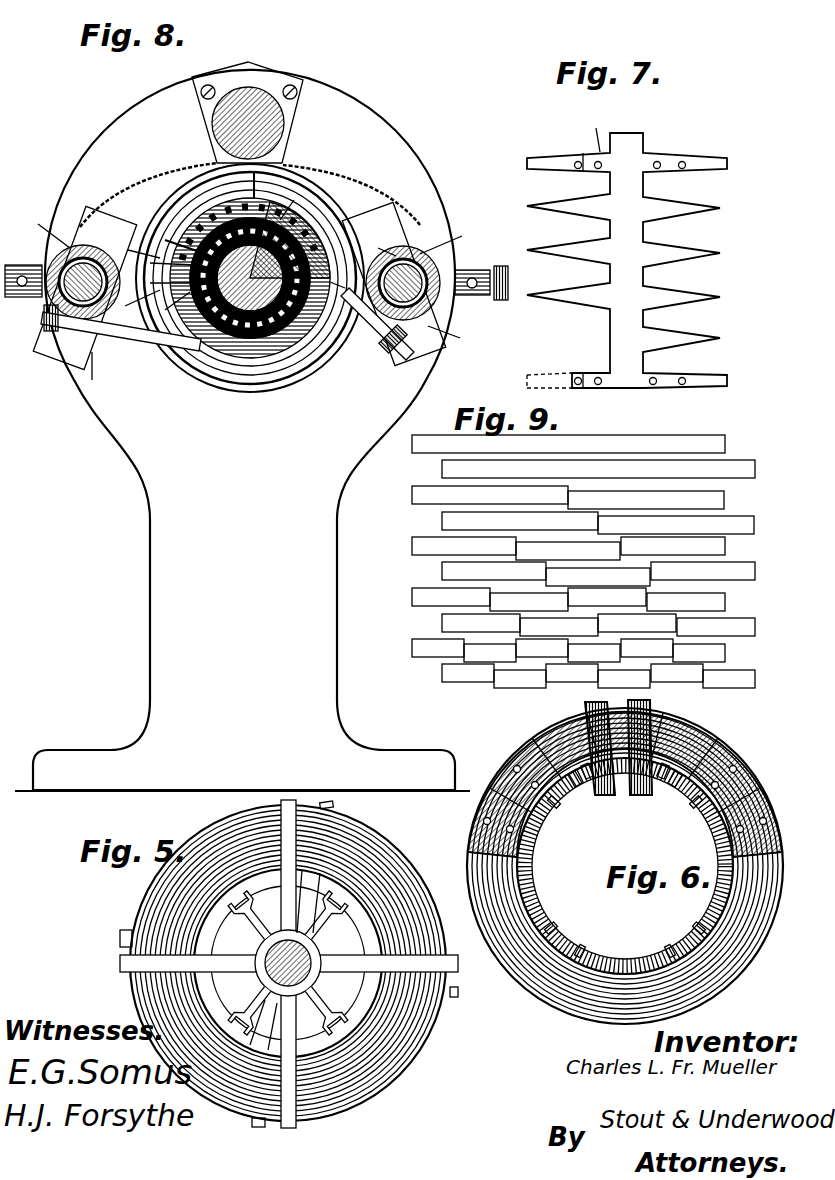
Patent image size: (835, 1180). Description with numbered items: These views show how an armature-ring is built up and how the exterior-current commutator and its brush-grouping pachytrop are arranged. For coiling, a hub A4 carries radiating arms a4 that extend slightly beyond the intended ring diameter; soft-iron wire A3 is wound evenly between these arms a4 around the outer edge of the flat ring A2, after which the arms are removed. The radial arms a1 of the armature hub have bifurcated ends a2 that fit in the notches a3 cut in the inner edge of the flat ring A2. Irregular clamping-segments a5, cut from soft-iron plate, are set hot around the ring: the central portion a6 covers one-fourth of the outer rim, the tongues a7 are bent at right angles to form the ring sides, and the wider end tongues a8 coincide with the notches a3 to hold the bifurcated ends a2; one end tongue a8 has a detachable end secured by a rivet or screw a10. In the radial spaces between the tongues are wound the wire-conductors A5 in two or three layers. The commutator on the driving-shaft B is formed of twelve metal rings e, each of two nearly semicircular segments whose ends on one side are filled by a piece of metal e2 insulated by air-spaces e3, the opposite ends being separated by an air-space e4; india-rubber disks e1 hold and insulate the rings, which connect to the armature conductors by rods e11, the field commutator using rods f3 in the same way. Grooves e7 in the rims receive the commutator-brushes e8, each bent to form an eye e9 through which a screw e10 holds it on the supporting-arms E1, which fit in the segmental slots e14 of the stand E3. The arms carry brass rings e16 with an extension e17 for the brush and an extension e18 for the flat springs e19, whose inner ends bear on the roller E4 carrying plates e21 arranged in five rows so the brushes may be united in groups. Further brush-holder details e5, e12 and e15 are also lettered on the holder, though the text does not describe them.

In FIG. 8, the stand E3 is at (242, 430).
In FIG. 8, the roller E4 is at (252, 90).
In FIG. 8, the supporting-arm E1 is at (239, 285).
In FIG. 8, the driving-shaft B is at (250, 278).
In FIG. 5, the driving-shaft B is at (288, 963).
In FIG. 8, the metal ring e is at (252, 340).
In FIG. 8, the groove e7 is at (222, 352).
In FIG. 8, the air-space e4 is at (292, 360).
In FIG. 8, the air-space e3 is at (210, 226).
In FIG. 8, the rod f3 is at (252, 183).
In FIG. 8, the rod e11 is at (294, 201).
In FIG. 8, the piece of metal e2 is at (182, 233).
In FIG. 8, the brass ring e16 is at (464, 312).
In FIG. 8, the india-rubber disk e1 is at (240, 278).
In FIG. 8, the brush spring e15 is at (136, 244).
In FIG. 8, the brush pin e12 is at (133, 305).
In FIG. 8, the brush holder arm e5 is at (170, 308).
In FIG. 8, the commutator-brush e8 is at (145, 342).
In FIG. 8, the eye e9 is at (45, 320).
In FIG. 8, the screw e10 is at (50, 340).
In FIG. 8, the segmental slot e14 is at (235, 313).
In FIG. 8, the extension e17 is at (457, 337).
In FIG. 8, the extension e18 is at (250, 232).
In FIG. 8, the flat spring e19 is at (126, 199).
In FIG. 8, the plate e21 is at (297, 98).
In FIG. 9, the plate e21 is at (424, 532).
In FIG. 7, the central portion a6 is at (627, 260).
In FIG. 7, the end tongue a8 is at (556, 162).
In FIG. 6, the end tongue a8 is at (578, 786).
In FIG. 7, the rivet or screw a10 is at (578, 169).
In FIG. 7, the clamping-segment a5 is at (591, 131).
In FIG. 6, the clamping-segment a5 is at (524, 760).
In FIG. 7, the tongue a7 is at (676, 210).
In FIG. 6, the tongue a7 is at (562, 740).
In FIG. 5, the soft-iron wire coil A3 is at (418, 1032).
In FIG. 6, the soft-iron wire coil A3 is at (732, 970).
In FIG. 5, the hub A4 is at (325, 950).
In FIG. 5, the bifurcated end a2 is at (304, 960).
In FIG. 5, the arm a1 is at (303, 960).
In FIG. 5, the arm a4 is at (281, 802).
In FIG. 6, the flat ring A2 is at (520, 878).
In FIG. 6, the wire-conductor A5 is at (594, 704).
In FIG. 6, the notch a3 is at (556, 808).